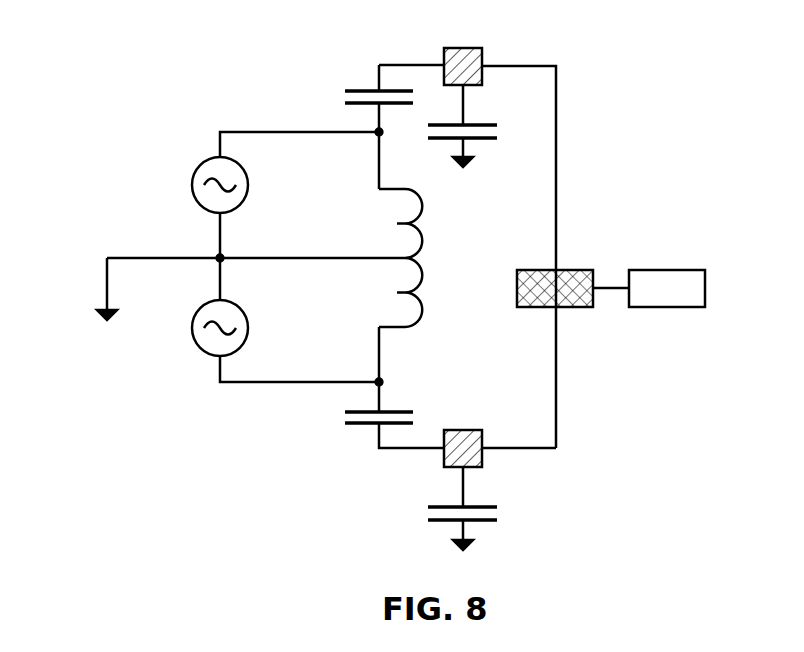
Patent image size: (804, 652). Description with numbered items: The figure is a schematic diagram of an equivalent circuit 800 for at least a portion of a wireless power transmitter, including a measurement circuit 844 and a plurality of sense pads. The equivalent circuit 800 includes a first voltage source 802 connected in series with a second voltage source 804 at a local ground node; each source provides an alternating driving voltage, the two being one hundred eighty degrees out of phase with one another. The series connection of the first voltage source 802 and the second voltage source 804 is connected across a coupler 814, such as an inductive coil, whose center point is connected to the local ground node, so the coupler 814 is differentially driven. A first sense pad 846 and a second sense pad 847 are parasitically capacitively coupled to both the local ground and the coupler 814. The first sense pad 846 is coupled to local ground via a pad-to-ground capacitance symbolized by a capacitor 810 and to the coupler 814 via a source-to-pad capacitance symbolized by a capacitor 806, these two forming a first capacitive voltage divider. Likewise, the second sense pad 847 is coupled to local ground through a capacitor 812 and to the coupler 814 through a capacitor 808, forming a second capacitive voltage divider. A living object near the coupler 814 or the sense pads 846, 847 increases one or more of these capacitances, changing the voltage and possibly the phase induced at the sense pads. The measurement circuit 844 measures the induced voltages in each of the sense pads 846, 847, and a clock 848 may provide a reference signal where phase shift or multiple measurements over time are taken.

The equivalent circuit 800 is at (227, 66).
The first voltage source 802 is at (207, 160).
The second voltage source 804 is at (207, 303).
The capacitor 806 is at (371, 88).
The capacitor 808 is at (369, 428).
The capacitor 810 is at (480, 120).
The capacitor 812 is at (485, 504).
The coupler 814 is at (420, 230).
The measurement circuit 844 is at (577, 270).
The first sense pad 846 is at (463, 48).
The second sense pad 847 is at (471, 430).
The clock 848 is at (682, 270).